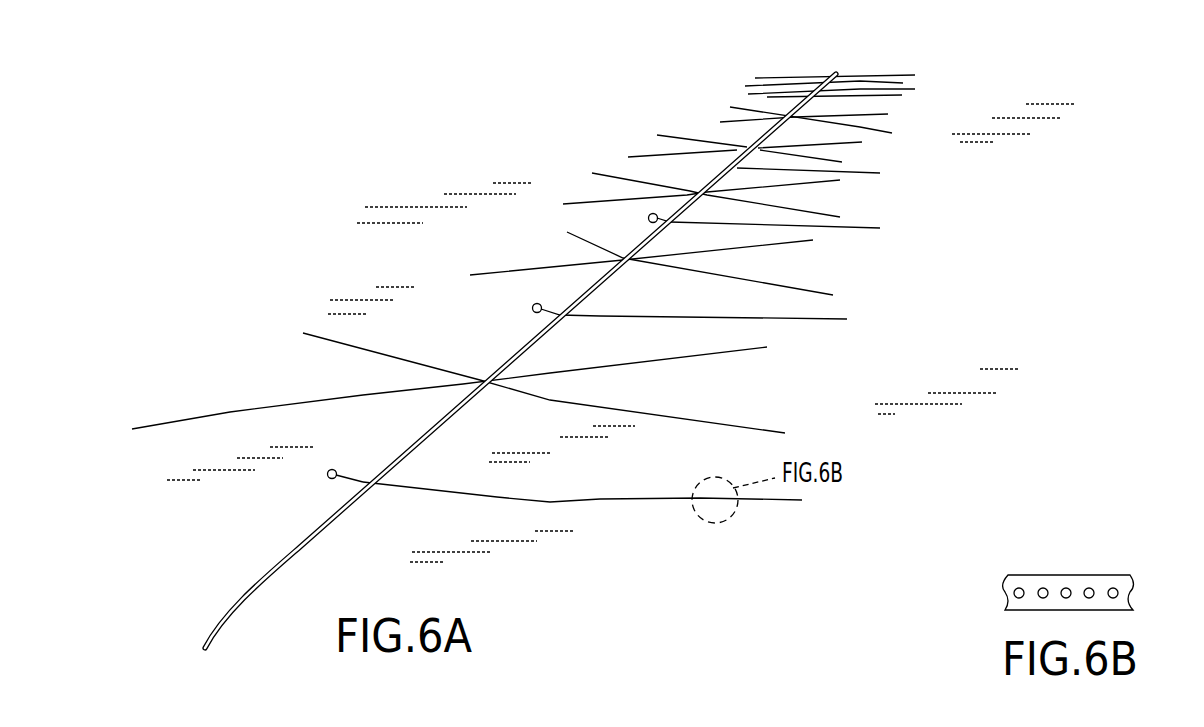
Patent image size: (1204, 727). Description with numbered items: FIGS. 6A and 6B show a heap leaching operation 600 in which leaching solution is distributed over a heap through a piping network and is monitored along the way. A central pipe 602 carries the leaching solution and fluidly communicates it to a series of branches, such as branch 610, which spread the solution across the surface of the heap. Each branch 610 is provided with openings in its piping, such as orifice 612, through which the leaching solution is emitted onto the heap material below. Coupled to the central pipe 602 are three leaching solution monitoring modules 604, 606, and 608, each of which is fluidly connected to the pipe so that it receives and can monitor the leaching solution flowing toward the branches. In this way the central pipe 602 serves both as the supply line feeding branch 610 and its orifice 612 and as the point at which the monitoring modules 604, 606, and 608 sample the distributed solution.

In FIG. 6A, the heap leaching operation 600 is at (360, 112).
In FIG. 6A, the central pipe 602 is at (315, 528).
In FIG. 6A, the leaching solution monitoring module 604 is at (328, 475).
In FIG. 6A, the leaching solution monitoring module 606 is at (533, 309).
In FIG. 6A, the leaching solution monitoring module 608 is at (645, 218).
In FIG. 6A, the branch 610 is at (668, 498).
In FIG. 6B, the orifice 612 is at (1068, 588).